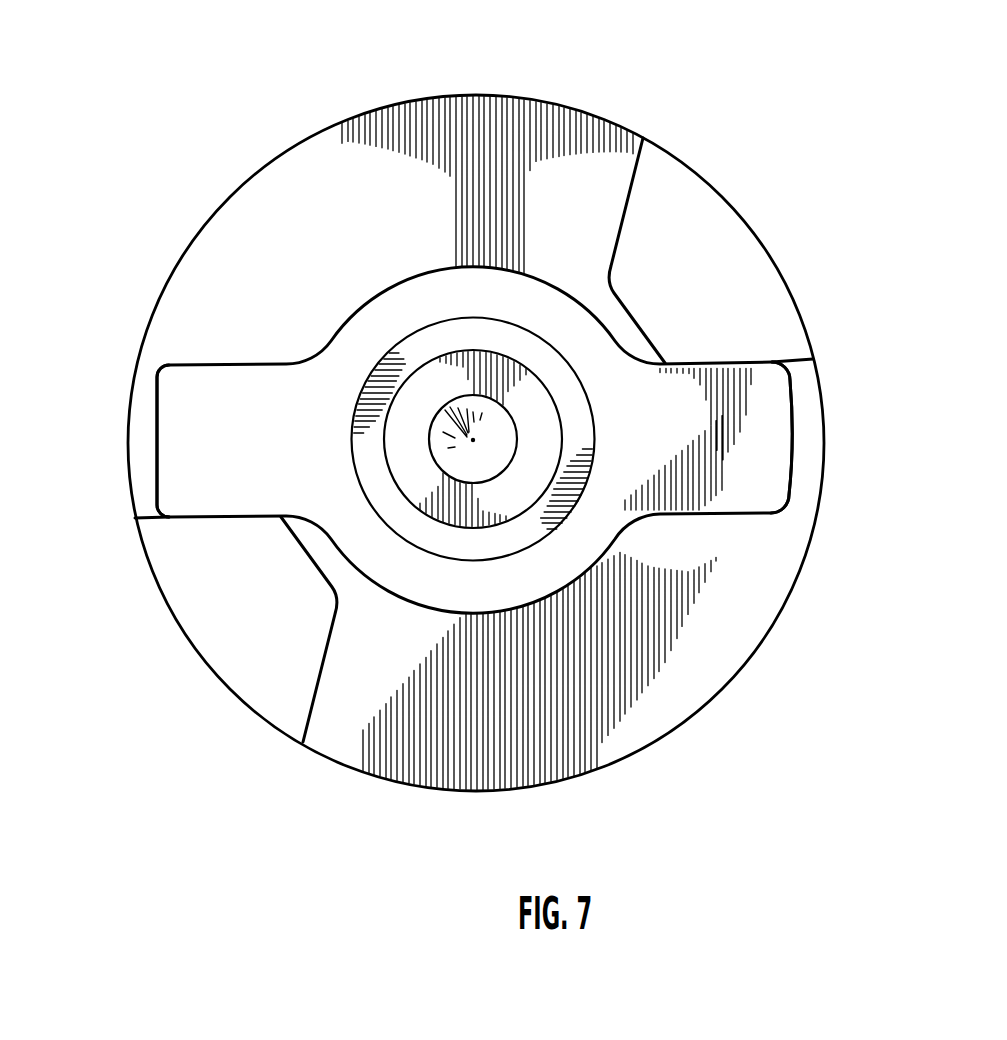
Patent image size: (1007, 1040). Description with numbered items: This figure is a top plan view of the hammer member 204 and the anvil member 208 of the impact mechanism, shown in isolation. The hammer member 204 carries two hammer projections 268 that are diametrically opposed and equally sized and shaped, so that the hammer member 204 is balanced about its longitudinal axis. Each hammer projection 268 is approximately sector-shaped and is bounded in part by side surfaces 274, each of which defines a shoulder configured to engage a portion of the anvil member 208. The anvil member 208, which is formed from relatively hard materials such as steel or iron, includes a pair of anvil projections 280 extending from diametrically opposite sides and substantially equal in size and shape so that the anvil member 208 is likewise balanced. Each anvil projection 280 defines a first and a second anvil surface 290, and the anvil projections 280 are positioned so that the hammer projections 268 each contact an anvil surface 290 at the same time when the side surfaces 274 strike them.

The hammer member 204 is at (718, 682).
The anvil member 208 is at (434, 303).
The hammer projections 268 is at (718, 360).
The side surfaces 274 is at (622, 203).
The anvil projections 280 is at (755, 458).
The anvil surface 290 is at (722, 273).